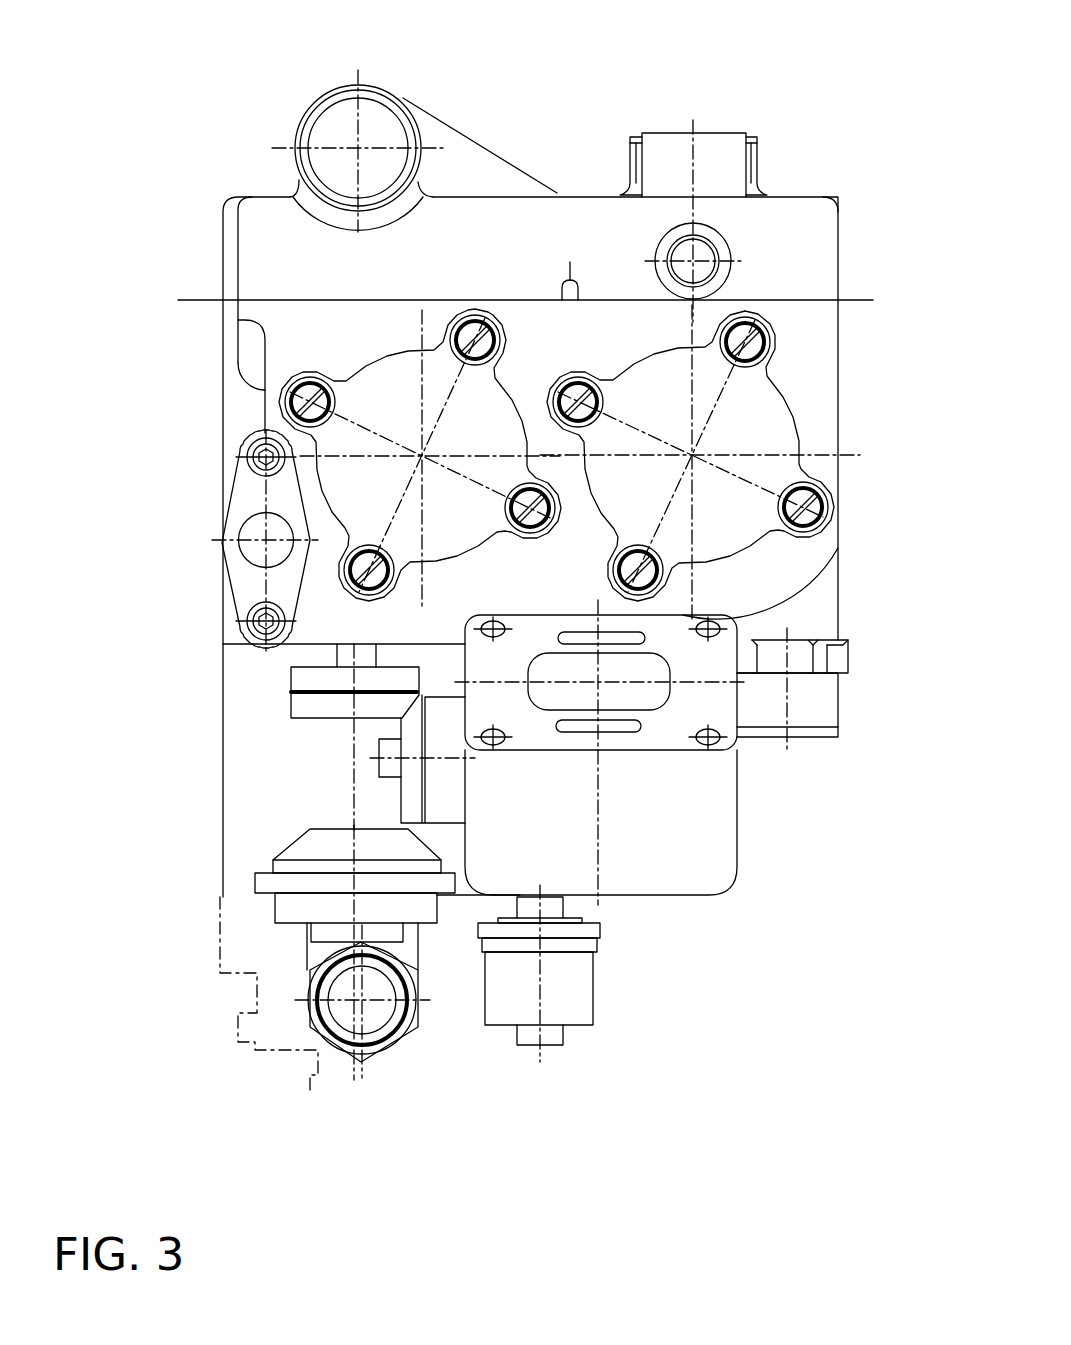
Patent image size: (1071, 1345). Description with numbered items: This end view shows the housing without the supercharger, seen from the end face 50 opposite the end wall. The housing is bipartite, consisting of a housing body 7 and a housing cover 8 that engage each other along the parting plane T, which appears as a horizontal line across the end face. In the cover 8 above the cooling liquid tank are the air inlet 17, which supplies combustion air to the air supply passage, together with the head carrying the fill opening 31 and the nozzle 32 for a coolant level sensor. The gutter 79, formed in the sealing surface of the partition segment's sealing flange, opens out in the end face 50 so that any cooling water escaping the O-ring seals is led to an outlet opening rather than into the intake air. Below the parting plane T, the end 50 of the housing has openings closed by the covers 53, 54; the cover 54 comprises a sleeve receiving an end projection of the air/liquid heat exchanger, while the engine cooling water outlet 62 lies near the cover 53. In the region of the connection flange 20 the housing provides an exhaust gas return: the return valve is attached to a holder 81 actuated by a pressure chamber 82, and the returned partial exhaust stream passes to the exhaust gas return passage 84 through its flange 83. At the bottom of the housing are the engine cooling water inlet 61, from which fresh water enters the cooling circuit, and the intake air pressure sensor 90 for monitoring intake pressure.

The housing cover 8 is at (476, 213).
The air inlet 17 is at (340, 107).
The nozzle 32 is at (665, 148).
The fill opening 31 is at (757, 160).
The gutter 79 is at (575, 287).
The parting plane T is at (178, 298).
The cover 54 is at (375, 385).
The cover 53 is at (763, 422).
The end 50 is at (822, 360).
The housing body 7 is at (823, 583).
The flange 83 is at (250, 497).
The exhaust gas return passage 84 is at (258, 530).
The holder 81 is at (316, 683).
The connection flange 20 is at (663, 731).
The engine cooling water outlet 62 is at (769, 702).
The pressure chamber 82 is at (288, 905).
The engine cooling water inlet 61 is at (377, 1013).
The intake air pressure sensor 90 is at (573, 998).